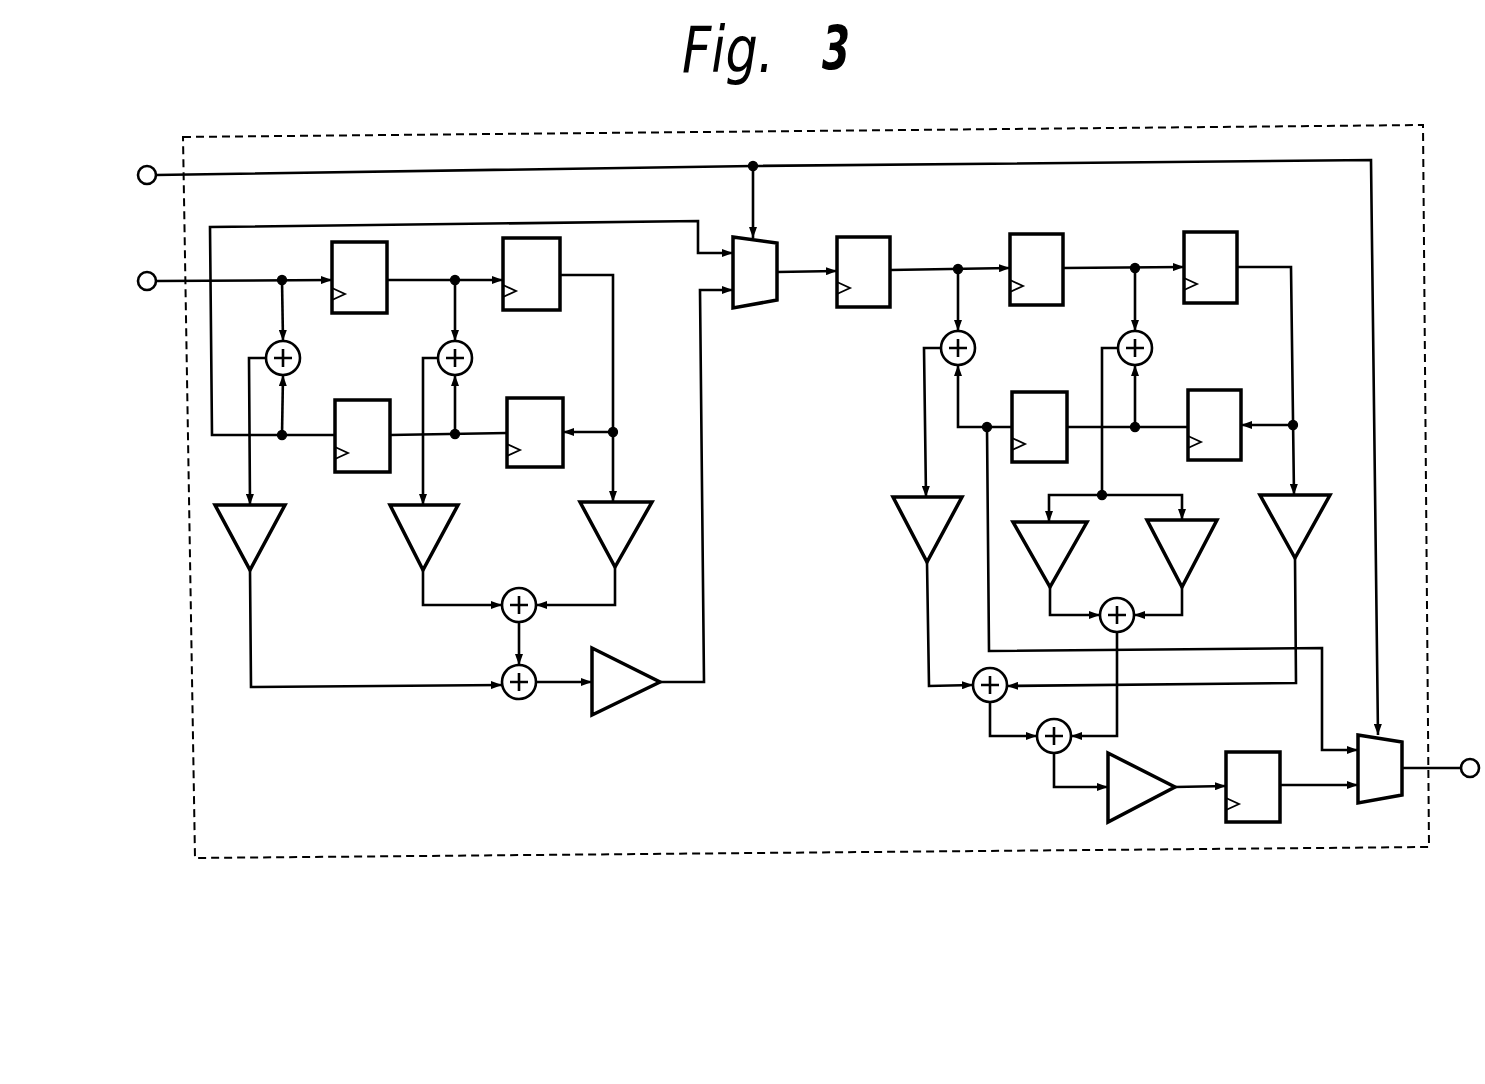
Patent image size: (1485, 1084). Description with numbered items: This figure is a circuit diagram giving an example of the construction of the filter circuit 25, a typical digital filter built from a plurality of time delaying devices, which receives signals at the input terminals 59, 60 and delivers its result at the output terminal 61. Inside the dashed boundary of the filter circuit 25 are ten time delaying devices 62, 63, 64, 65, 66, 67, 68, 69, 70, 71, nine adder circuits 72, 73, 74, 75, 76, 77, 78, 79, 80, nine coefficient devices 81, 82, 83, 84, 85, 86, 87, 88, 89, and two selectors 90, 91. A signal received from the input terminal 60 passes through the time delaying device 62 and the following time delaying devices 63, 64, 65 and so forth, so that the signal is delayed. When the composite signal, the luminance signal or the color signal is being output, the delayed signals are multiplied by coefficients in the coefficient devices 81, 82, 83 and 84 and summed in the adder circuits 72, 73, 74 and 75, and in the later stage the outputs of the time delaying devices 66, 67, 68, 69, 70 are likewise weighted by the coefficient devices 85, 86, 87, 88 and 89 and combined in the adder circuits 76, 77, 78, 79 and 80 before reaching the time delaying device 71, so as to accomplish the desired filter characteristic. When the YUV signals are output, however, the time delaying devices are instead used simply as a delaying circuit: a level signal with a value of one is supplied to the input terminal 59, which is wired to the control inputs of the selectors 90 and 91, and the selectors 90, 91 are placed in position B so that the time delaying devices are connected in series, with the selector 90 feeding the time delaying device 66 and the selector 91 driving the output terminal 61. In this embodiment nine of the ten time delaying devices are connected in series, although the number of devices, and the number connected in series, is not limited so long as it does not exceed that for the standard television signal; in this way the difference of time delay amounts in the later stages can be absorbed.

The filter circuit 25 is at (988, 128).
The input terminal 59 is at (147, 166).
The input terminal 60 is at (147, 272).
The output terminal 61 is at (1470, 759).
The time delaying device 62 is at (387, 254).
The time delaying device 63 is at (560, 252).
The time delaying device 64 is at (532, 398).
The time delaying device 65 is at (360, 400).
The time delaying device 66 is at (861, 236).
The time delaying device 67 is at (1033, 233).
The time delaying device 68 is at (1208, 231).
The time delaying device 69 is at (1211, 390).
The time delaying device 70 is at (1037, 392).
The time delaying device 71 is at (1252, 752).
The adder circuit 72 is at (268, 345).
The adder circuit 73 is at (442, 345).
The adder circuit 74 is at (519, 588).
The adder circuit 75 is at (503, 670).
The adder circuit 76 is at (946, 336).
The adder circuit 77 is at (1121, 336).
The adder circuit 78 is at (1117, 597).
The adder circuit 79 is at (978, 698).
The adder circuit 80 is at (1044, 752).
The coefficient device 81 is at (270, 503).
The coefficient device 82 is at (443, 503).
The coefficient device 83 is at (635, 501).
The coefficient device 84 is at (625, 662).
The coefficient device 85 is at (945, 496).
The coefficient device 86 is at (1030, 555).
The coefficient device 87 is at (1203, 556).
The coefficient device 88 is at (1312, 493).
The coefficient device 89 is at (1141, 768).
The selector 90 is at (762, 241).
The selector 91 is at (1368, 735).